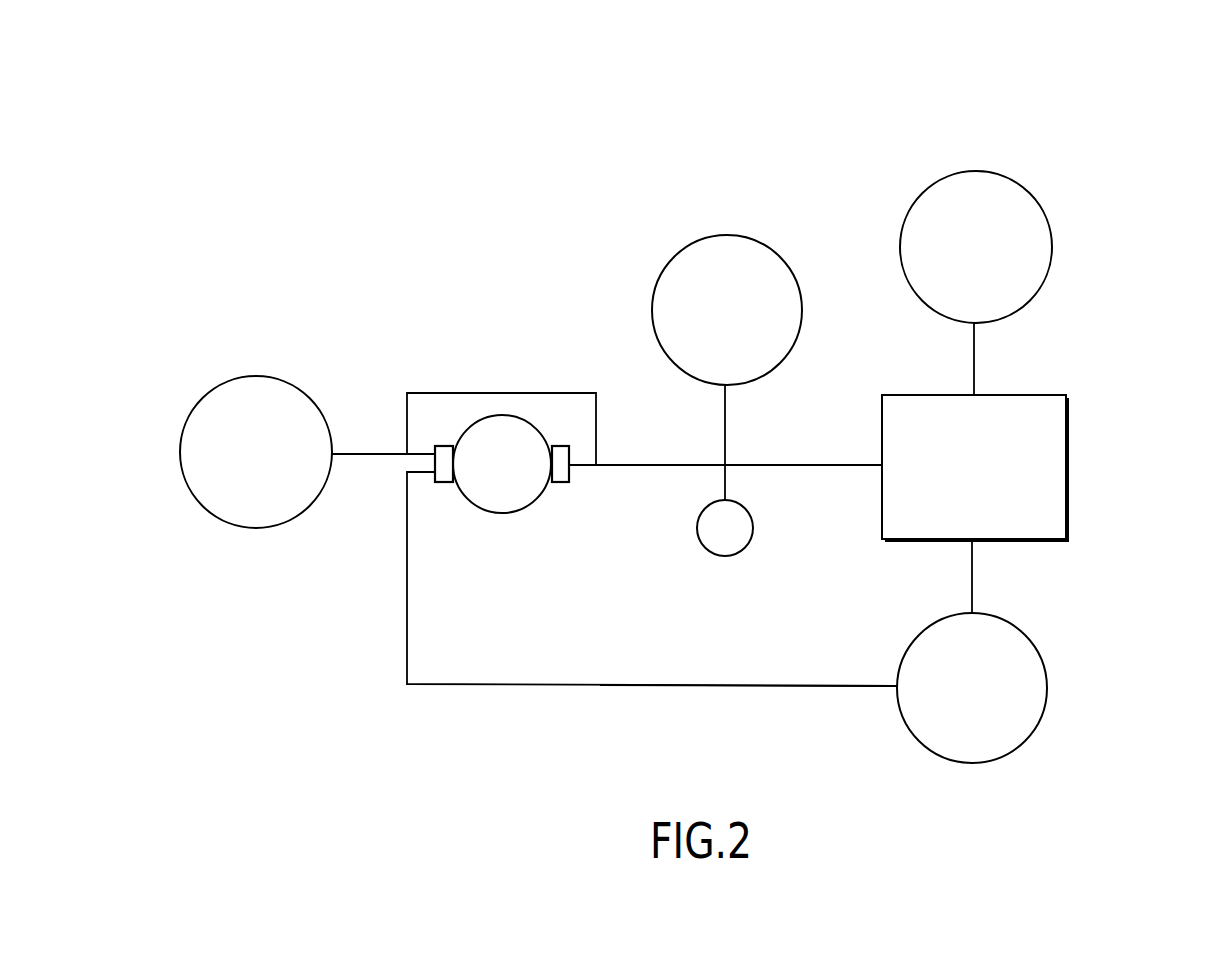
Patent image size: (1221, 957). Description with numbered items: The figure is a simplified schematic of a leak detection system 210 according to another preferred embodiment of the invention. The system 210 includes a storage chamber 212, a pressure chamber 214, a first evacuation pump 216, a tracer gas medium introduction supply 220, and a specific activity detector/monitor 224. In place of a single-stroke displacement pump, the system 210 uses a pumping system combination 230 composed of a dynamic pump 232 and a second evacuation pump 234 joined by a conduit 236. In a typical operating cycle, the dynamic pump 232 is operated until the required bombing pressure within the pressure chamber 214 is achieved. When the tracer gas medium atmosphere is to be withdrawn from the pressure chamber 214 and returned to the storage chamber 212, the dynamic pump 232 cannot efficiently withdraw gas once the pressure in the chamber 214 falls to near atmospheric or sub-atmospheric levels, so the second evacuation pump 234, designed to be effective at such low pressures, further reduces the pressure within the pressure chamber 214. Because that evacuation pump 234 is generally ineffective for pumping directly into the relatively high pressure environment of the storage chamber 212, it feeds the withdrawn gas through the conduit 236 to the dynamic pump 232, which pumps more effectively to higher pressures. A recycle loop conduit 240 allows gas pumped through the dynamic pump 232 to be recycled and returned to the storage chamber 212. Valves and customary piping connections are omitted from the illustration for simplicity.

The system 210 is at (870, 96).
The storage chamber 212 is at (233, 464).
The pressure chamber 214 is at (951, 482).
The evacuation pump 216 is at (953, 260).
The tracer gas medium introduction supply 220 is at (703, 322).
The specific activity detector/monitor 224 is at (720, 545).
The pumping system combination 230 is at (659, 700).
The dynamic pump 232 is at (480, 479).
The second evacuation pump 234 is at (950, 698).
The conduit 236 is at (440, 685).
The recycle loop conduit 240 is at (500, 393).